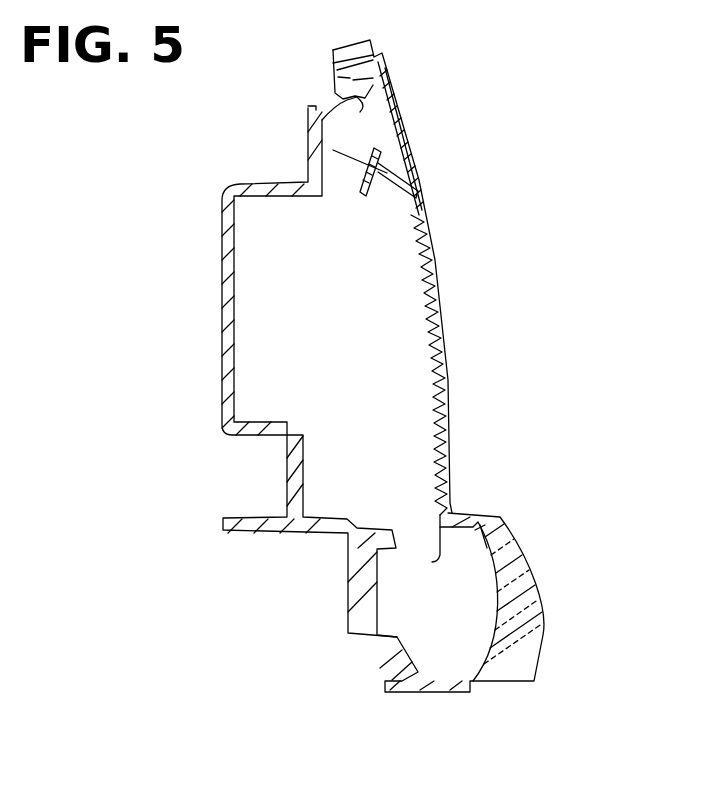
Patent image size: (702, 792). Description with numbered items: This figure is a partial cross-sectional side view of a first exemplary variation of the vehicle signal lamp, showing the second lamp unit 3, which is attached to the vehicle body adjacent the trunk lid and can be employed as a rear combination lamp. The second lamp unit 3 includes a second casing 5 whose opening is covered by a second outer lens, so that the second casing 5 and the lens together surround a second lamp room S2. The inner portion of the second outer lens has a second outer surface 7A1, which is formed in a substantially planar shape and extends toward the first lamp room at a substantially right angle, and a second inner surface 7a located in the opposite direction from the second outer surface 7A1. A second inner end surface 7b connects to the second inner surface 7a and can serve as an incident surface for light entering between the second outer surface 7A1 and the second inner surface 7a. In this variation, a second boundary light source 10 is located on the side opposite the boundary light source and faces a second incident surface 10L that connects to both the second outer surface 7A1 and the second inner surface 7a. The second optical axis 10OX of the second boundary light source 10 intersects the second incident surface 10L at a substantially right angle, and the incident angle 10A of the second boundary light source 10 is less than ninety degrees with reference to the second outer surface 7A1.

The second lamp unit 3 is at (434, 190).
The second casing 5 is at (222, 347).
The second outer surface 7A1 is at (450, 307).
The second inner surface 7a is at (432, 404).
The second inner end surface 7b is at (447, 560).
The second boundary light source 10 is at (376, 193).
The second incident surface 10L is at (395, 155).
The incident angle 10A is at (388, 102).
The second optical axis 10OX is at (360, 158).
The second lamp room S2 is at (340, 381).